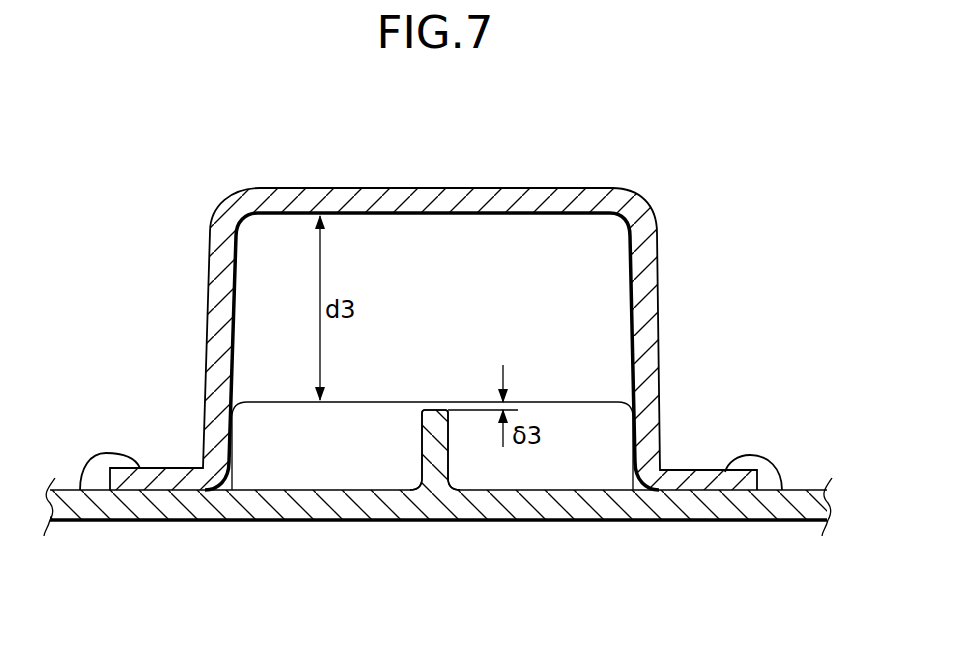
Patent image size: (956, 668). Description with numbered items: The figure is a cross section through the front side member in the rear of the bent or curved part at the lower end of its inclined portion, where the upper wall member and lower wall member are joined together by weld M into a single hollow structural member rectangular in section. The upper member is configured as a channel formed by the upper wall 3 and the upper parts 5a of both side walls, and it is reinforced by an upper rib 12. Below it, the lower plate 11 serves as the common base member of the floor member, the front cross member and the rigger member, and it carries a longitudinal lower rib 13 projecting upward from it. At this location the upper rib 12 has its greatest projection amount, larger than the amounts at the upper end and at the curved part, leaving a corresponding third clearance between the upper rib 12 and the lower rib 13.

The upper wall 3 is at (362, 186).
The upper parts of side walls 5a is at (210, 287).
The upper ribs 12 is at (530, 246).
The longitudinal lower ribs 13 is at (422, 440).
The lower plate 11 is at (551, 515).
The weld M is at (110, 452).